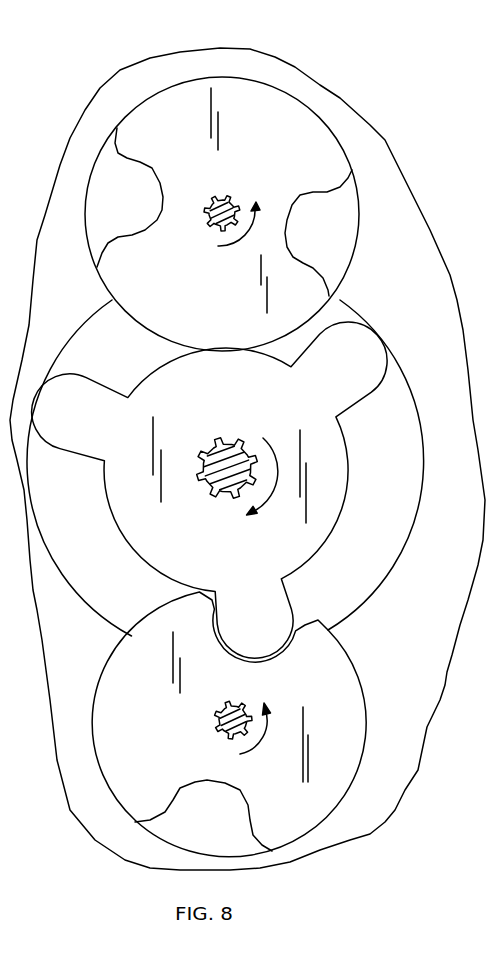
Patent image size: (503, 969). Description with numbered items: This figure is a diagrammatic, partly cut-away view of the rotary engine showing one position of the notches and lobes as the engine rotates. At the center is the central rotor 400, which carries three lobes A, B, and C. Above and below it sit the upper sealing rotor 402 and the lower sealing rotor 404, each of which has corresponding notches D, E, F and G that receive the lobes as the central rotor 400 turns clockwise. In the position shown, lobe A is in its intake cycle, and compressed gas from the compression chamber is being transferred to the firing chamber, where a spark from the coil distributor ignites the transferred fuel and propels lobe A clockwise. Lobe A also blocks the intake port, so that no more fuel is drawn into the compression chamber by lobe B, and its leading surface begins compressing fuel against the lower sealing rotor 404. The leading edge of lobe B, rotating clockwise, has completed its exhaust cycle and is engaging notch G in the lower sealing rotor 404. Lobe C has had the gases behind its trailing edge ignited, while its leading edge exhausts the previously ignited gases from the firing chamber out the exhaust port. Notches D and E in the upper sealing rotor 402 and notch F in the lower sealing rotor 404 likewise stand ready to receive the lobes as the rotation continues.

The central rotor 400 is at (250, 392).
The upper sealing rotor 402 is at (243, 306).
The lower sealing rotor 404 is at (165, 747).
The lobe A is at (348, 343).
The lobe B is at (250, 621).
The lobe C is at (60, 420).
The notch D is at (319, 228).
The notch E is at (128, 206).
The notch F is at (203, 818).
The notch G is at (268, 658).